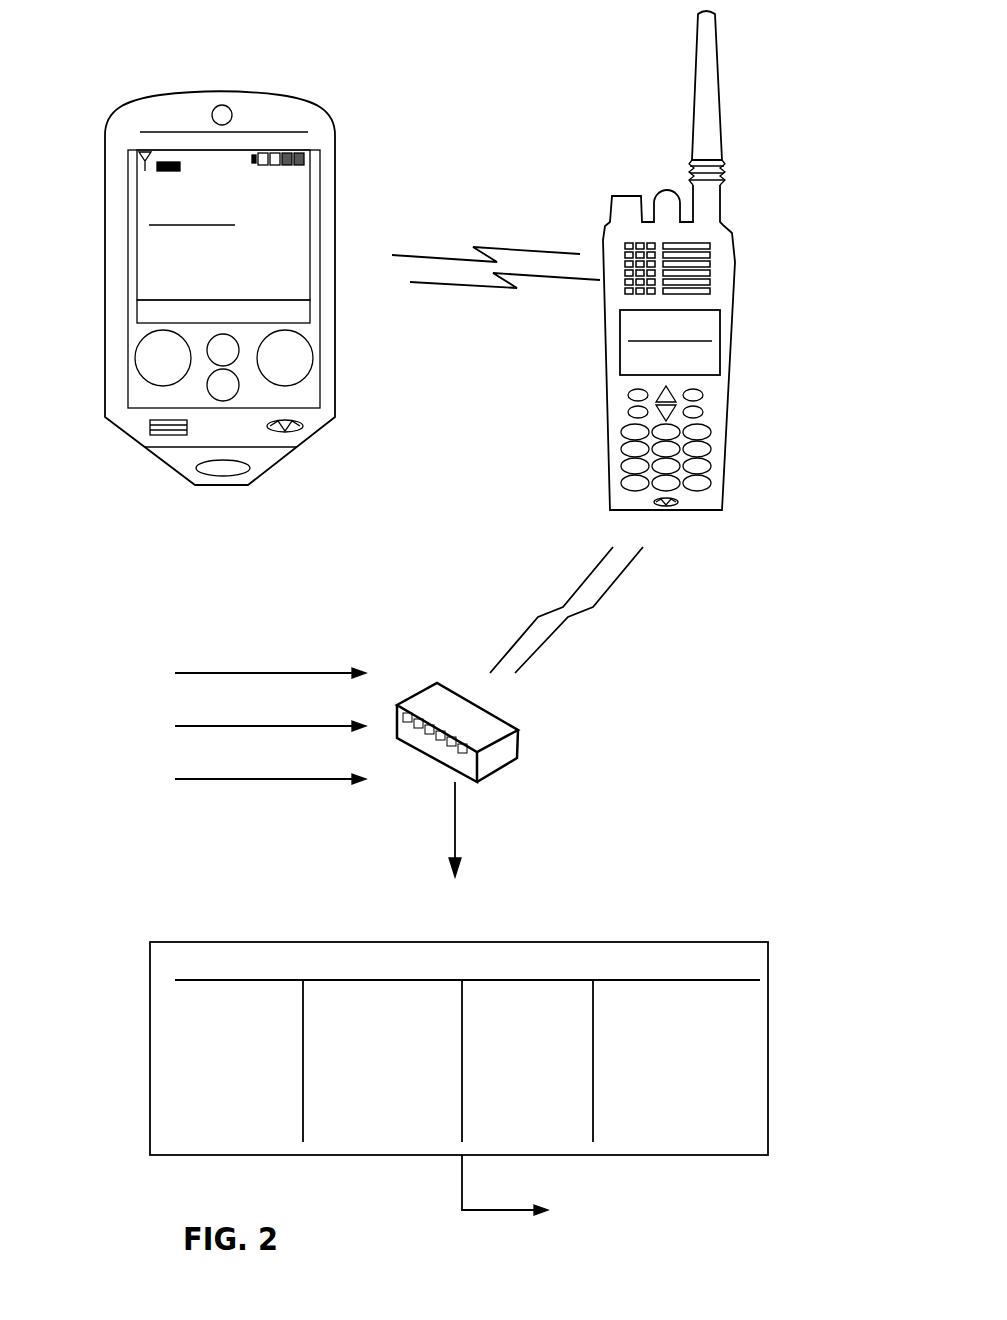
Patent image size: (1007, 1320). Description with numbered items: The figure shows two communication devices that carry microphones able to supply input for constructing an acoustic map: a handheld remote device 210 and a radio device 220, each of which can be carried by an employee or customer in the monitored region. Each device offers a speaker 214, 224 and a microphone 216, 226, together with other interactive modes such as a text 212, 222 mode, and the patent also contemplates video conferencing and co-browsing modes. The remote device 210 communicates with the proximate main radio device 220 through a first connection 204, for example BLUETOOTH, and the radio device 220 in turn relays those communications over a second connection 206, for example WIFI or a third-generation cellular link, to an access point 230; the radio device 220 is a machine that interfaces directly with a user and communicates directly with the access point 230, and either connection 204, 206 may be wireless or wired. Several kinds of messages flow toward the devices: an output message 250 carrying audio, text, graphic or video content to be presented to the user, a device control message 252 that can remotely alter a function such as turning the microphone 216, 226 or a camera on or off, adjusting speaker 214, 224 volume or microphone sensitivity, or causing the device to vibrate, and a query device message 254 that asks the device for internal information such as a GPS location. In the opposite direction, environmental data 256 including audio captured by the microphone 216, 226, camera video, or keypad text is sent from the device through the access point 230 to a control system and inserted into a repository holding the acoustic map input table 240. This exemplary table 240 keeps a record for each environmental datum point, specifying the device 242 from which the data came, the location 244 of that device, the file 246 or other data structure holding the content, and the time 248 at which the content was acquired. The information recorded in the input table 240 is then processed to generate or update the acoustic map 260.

The remote device 210 is at (280, 93).
The text 212 is at (191, 212).
The speaker 214 is at (163, 435).
The microphone 216 is at (290, 432).
The first connection 204 is at (580, 254).
The radio device 220 is at (582, 262).
The text 222 is at (670, 342).
The speaker 224 is at (623, 293).
The microphone 226 is at (654, 502).
The second connection 206 is at (550, 643).
The access point 230 is at (517, 757).
The output message 250 is at (270, 659).
The device control message 252 is at (273, 711).
The query device message 254 is at (270, 764).
The environmental data 256 is at (455, 828).
The acoustic map input table 240 is at (459, 1032).
The device 242 is at (240, 1024).
The location 244 is at (401, 1024).
The file 246 is at (533, 1024).
The time 248 is at (674, 1024).
The acoustic map 260 is at (597, 1188).